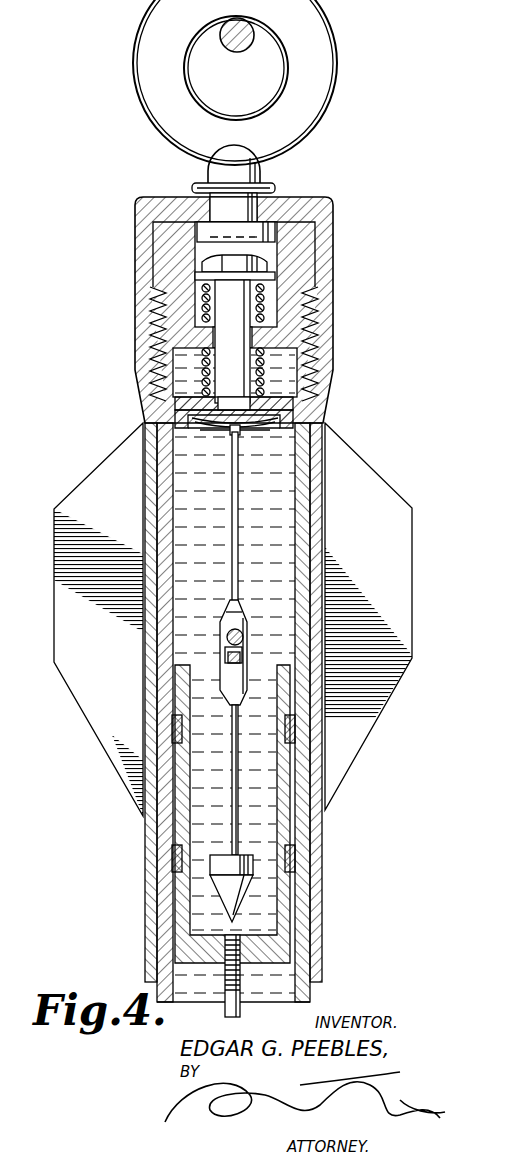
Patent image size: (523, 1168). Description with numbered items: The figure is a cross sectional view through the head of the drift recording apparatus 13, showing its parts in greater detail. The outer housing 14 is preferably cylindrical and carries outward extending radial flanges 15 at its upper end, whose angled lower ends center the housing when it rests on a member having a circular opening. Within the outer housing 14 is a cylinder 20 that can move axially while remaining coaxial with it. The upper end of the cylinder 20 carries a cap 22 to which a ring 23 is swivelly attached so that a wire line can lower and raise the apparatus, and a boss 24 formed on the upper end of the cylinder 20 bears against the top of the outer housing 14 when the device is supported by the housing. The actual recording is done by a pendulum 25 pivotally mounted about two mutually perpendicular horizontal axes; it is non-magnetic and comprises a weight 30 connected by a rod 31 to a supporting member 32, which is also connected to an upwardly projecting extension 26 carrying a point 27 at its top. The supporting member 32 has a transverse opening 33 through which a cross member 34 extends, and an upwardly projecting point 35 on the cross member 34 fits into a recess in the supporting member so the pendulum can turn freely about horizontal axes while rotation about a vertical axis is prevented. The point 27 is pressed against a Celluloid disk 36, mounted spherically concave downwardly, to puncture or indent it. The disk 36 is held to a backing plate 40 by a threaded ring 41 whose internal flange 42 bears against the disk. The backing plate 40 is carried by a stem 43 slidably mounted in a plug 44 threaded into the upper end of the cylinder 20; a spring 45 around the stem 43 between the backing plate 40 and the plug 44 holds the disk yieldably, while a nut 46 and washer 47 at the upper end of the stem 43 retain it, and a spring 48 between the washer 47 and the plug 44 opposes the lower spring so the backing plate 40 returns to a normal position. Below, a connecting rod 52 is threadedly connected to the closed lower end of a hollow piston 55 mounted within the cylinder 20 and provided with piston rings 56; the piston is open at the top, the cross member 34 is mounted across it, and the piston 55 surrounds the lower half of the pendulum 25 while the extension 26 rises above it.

The drift recording apparatus 13 is at (141, 675).
The outer housing 14 is at (318, 823).
The radial flanges 15 is at (388, 505).
The cylinder 20 is at (165, 877).
The cap 22 is at (140, 270).
The ring 23 is at (308, 57).
The boss 24 is at (155, 392).
The pendulum 25 is at (232, 776).
The extension 26 is at (238, 545).
The point 27 is at (240, 428).
The weight 30 is at (230, 918).
The rod 31 is at (233, 832).
The supporting member 32 is at (246, 632).
The transverse opening 33 is at (242, 657).
The cross member 34 is at (227, 660).
The point 35 is at (226, 650).
The disk 36 is at (217, 418).
The backing plate 40 is at (283, 403).
The threaded ring 41 is at (287, 418).
The internal flange 42 is at (177, 430).
The stem 43 is at (235, 340).
The plug 44 is at (293, 272).
The spring 45 is at (264, 367).
The nut 46 is at (266, 261).
The washer 47 is at (276, 279).
The spring 48 is at (264, 310).
The connecting rod 52 is at (225, 1010).
The hollow piston 55 is at (277, 902).
The piston rings 56 is at (290, 730).